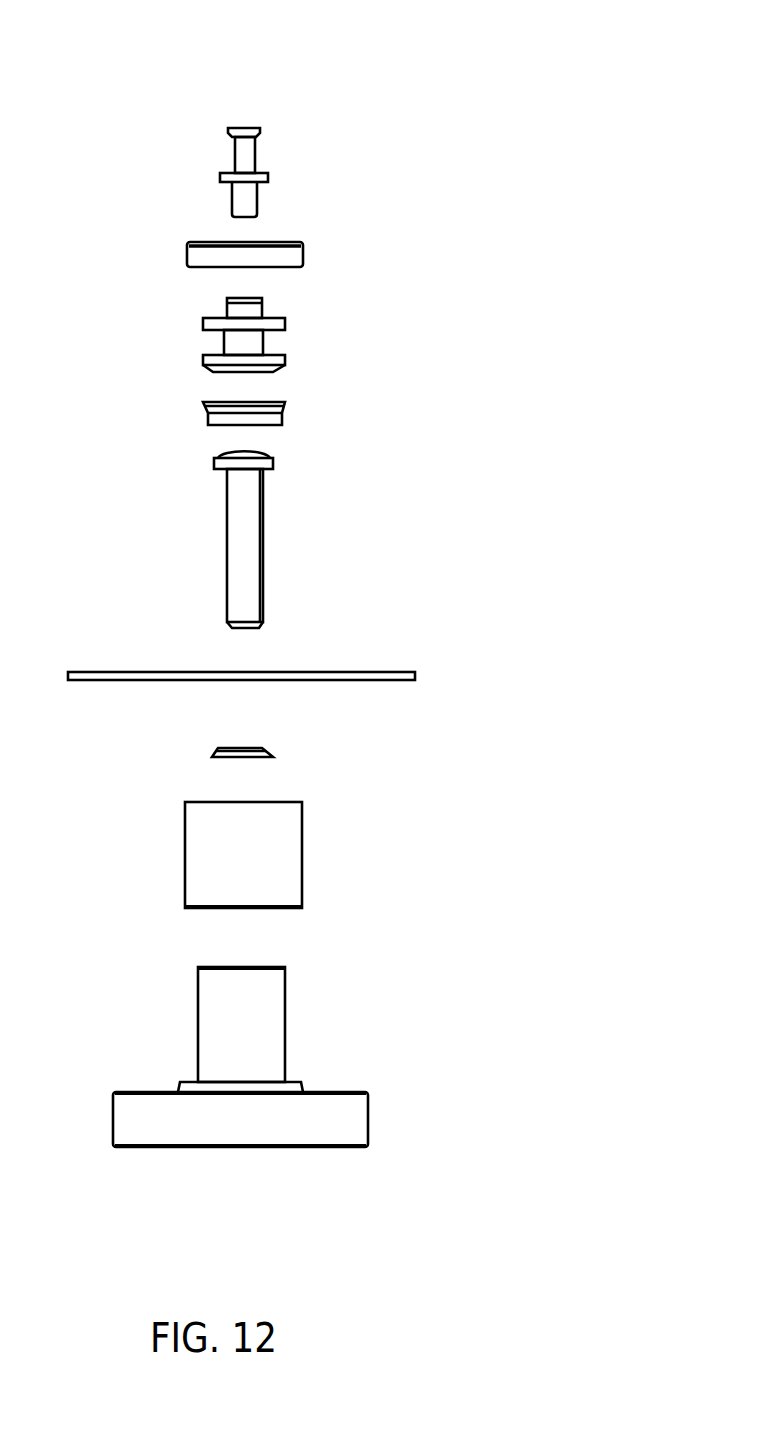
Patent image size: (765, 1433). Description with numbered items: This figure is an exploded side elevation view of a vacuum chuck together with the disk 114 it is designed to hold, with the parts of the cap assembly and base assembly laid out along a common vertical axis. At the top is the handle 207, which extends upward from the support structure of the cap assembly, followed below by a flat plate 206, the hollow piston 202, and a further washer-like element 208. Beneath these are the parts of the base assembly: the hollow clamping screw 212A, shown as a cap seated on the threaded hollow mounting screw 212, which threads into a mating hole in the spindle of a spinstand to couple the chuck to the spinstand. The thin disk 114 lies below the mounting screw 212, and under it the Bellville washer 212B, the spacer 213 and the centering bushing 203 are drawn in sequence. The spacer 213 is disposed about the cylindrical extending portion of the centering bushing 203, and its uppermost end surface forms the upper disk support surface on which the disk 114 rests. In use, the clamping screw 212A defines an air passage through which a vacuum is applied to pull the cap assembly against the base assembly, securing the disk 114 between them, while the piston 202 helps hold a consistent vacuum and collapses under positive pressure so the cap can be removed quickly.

The handle 207 is at (238, 118).
The plate 206 is at (231, 235).
The hollow piston 202 is at (188, 334).
The washer 208 is at (299, 404).
The hollow clamping screw 212A is at (275, 449).
The threaded hollow mounting screw 212 is at (265, 595).
The disk 114 is at (260, 670).
The Bellville washer 212B is at (258, 758).
The spacer 213 is at (257, 913).
The centering bushing 203 is at (250, 1157).